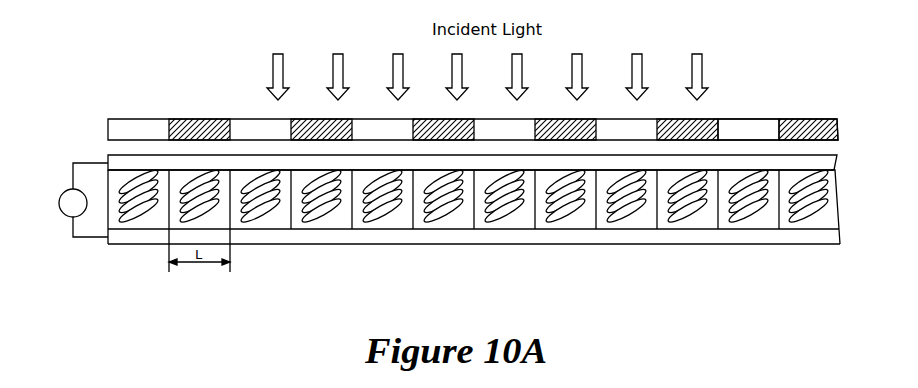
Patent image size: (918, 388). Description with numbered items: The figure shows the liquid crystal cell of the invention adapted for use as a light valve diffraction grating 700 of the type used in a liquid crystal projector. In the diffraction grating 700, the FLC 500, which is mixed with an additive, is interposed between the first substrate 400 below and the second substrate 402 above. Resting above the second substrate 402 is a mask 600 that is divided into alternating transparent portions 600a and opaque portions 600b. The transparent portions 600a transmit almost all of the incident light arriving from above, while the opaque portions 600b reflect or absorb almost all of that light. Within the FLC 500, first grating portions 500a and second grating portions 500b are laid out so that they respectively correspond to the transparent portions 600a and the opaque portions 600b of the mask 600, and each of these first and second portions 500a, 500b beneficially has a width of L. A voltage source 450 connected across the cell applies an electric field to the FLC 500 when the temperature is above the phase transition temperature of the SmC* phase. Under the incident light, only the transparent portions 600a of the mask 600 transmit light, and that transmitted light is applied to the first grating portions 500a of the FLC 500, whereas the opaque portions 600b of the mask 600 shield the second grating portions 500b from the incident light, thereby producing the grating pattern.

The mask 600 is at (473, 76).
The transparent portions 600a is at (747, 130).
The opaque portions 600b is at (812, 120).
The second substrate 402 is at (830, 159).
The FLC 500 is at (474, 243).
The first grating portions 500a is at (627, 223).
The second grating portions 500b is at (683, 222).
The first substrate 400 is at (806, 239).
The voltage source 450 is at (58, 208).
The light valve diffraction grating 700 is at (499, 169).